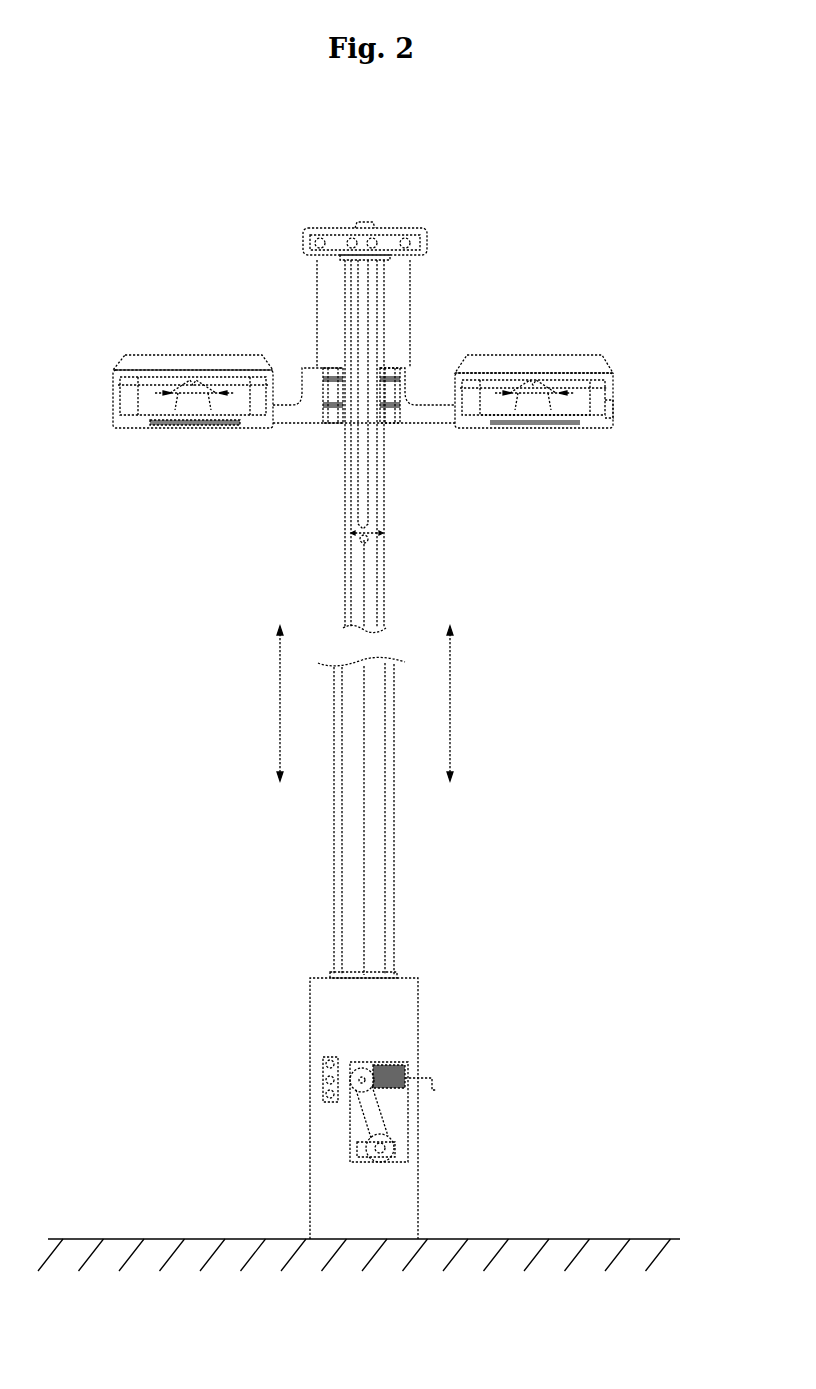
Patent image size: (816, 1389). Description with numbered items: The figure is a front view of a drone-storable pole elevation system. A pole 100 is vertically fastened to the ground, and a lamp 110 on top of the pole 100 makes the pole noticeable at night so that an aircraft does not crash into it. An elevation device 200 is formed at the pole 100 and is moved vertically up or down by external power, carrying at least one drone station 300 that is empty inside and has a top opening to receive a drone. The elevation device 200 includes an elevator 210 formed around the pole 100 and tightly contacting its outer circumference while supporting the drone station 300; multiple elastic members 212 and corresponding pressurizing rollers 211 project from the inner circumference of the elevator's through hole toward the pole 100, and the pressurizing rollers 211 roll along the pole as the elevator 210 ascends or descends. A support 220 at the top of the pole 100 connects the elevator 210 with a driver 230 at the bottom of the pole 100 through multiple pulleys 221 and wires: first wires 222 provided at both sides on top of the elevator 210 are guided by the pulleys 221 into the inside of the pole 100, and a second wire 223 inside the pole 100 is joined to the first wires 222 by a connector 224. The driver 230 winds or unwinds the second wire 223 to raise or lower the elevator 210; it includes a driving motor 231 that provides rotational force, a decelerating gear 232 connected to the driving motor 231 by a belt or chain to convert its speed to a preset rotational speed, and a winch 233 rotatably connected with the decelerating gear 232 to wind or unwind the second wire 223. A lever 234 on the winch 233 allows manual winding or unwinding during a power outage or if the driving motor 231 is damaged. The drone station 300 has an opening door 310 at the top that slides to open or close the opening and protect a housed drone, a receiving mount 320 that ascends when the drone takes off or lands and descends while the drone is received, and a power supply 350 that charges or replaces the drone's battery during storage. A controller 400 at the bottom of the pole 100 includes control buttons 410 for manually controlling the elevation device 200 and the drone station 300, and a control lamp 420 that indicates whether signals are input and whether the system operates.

The pole 100 is at (396, 795).
The lamp 110 is at (362, 222).
The elevation device 200 is at (300, 425).
The elevator 210 is at (445, 432).
The pressurizing rollers 211 is at (345, 430).
The elastic members 212 is at (392, 430).
The support 220 is at (430, 243).
The pulleys 221 is at (404, 236).
The first wires 222 is at (412, 300).
The second wire 223 is at (366, 572).
The connector 224 is at (386, 535).
The driver 230 is at (412, 1118).
The driving motor 231 is at (396, 1150).
The decelerating gear 232 is at (375, 1066).
The winch 233 is at (408, 1064).
The lever 234 is at (438, 1090).
The drone station 300 is at (598, 430).
The opening door 310 is at (193, 355).
The receiving mount 320 is at (615, 412).
The power supply 350 is at (185, 430).
The controller 400 is at (328, 1055).
The control buttons 410 is at (324, 1082).
The control lamp 420 is at (324, 1064).